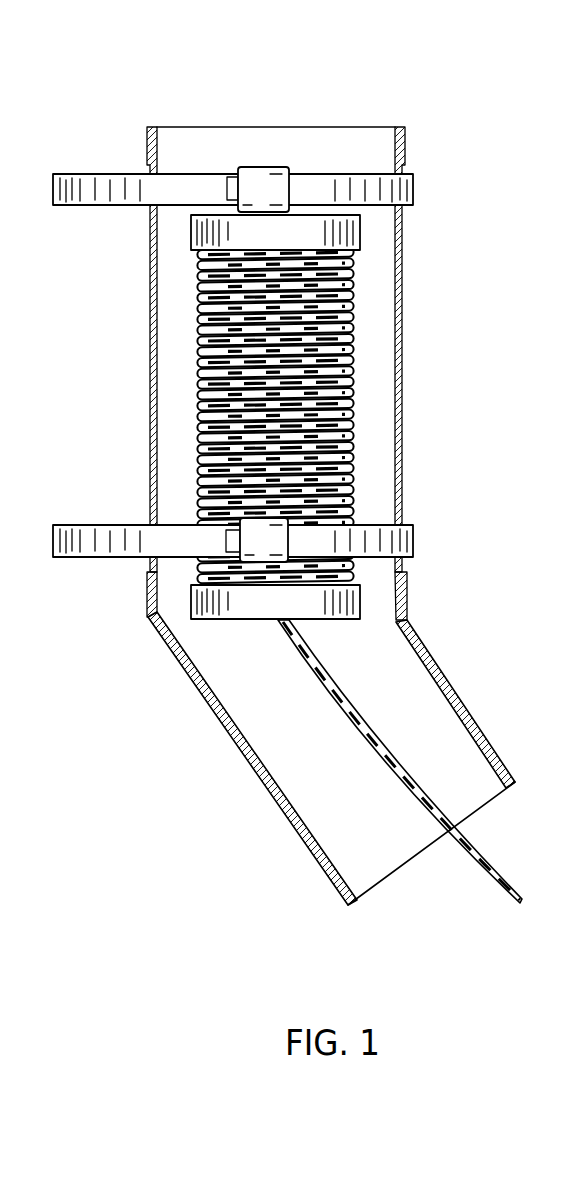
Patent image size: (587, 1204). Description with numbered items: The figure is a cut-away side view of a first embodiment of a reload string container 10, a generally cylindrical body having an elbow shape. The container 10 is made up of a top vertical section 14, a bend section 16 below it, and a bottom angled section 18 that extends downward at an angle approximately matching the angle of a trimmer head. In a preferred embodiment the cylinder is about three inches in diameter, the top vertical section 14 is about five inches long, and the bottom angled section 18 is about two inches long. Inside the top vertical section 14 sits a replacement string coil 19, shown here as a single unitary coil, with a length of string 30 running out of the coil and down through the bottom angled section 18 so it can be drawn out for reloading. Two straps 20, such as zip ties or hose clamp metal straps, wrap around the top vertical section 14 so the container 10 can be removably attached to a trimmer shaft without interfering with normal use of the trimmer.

The reload string container 10 is at (282, 503).
The top vertical section 14 is at (402, 323).
The bend section 16 is at (148, 617).
The bottom angled section 18 is at (262, 782).
The replacement string coil 19 is at (353, 438).
The straps 20 is at (413, 188).
The string 30 is at (485, 873).